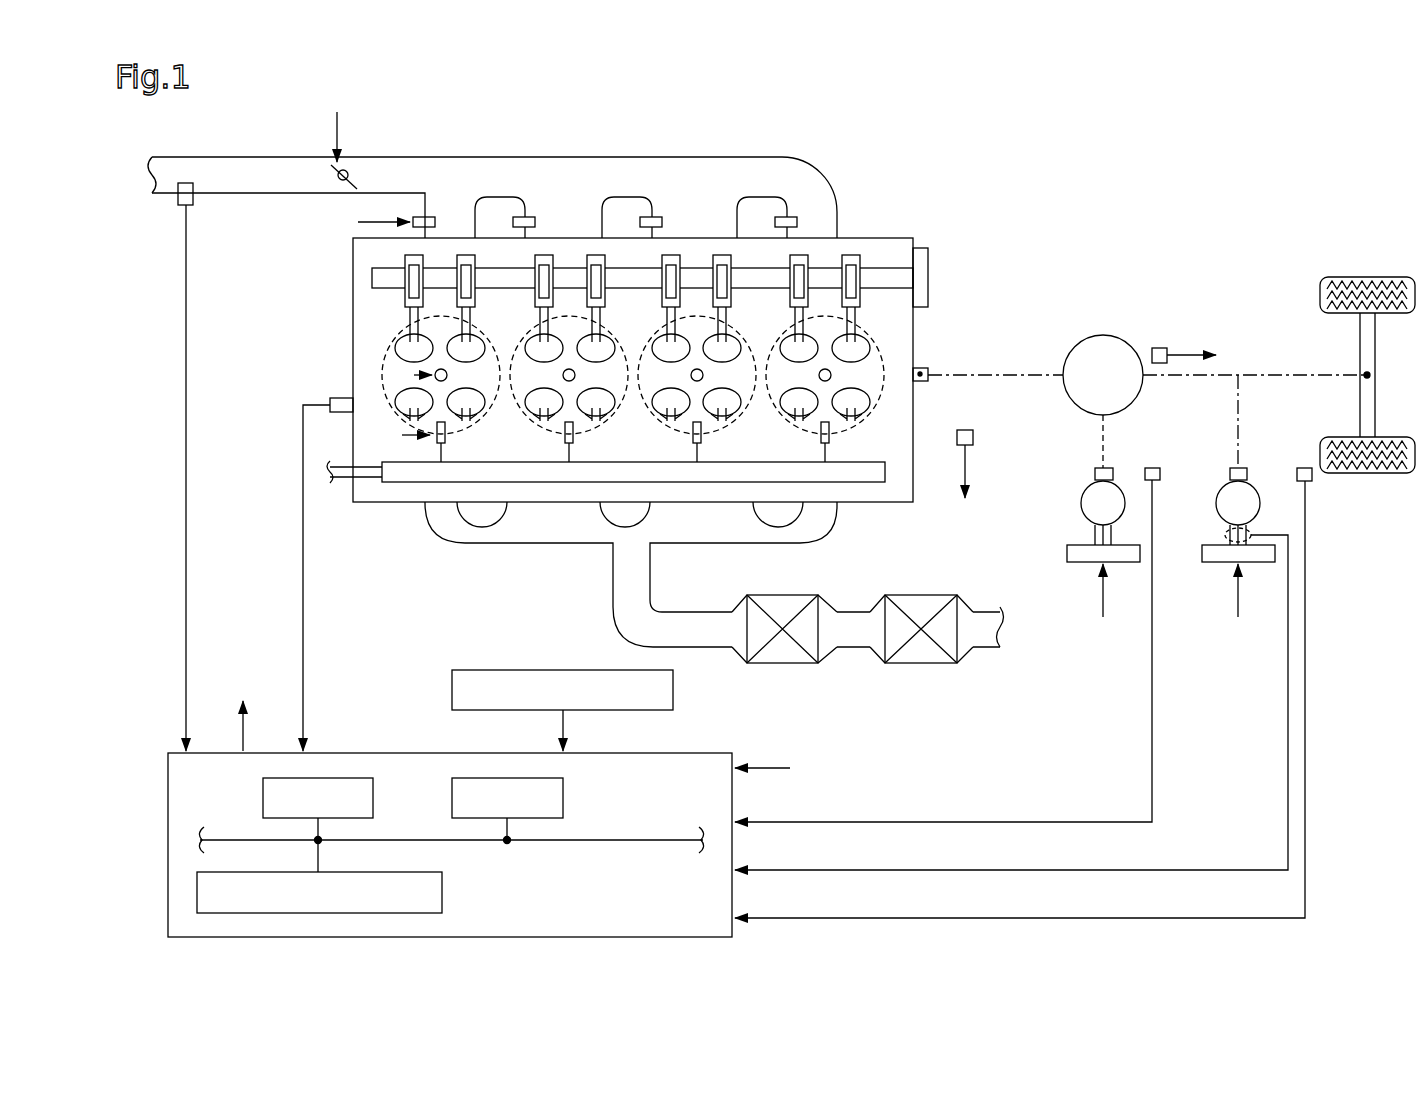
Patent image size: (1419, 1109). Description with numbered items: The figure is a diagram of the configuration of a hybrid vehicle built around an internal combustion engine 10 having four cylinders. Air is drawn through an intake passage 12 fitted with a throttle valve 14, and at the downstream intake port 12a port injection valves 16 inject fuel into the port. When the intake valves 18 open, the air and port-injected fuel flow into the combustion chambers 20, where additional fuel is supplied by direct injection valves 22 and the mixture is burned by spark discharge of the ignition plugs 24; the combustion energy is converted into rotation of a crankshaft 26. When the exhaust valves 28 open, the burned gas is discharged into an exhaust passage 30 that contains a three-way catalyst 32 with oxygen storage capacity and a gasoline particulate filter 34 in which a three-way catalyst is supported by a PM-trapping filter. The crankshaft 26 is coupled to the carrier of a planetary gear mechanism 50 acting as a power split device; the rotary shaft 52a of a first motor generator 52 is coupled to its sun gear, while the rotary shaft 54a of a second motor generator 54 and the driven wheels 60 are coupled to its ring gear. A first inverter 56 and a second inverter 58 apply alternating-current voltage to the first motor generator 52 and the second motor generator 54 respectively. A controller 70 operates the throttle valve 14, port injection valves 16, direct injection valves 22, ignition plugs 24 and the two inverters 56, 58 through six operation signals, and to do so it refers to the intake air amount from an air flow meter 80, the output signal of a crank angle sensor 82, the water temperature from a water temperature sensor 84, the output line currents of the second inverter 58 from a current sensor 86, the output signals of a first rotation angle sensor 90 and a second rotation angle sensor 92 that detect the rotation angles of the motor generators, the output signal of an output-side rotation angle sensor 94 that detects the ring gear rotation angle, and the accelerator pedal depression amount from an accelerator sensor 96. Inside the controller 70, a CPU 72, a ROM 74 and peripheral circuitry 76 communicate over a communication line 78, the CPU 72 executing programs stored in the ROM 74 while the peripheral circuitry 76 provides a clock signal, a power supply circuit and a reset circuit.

The internal combustion engine 10 is at (917, 212).
The intake passage 12 is at (194, 156).
The intake port 12a is at (814, 172).
The throttle valve 14 is at (358, 178).
The port injection valves 16 is at (784, 218).
The intake valves 18 is at (412, 317).
The combustion chambers 20 is at (386, 361).
The direct injection valves 22 is at (446, 437).
The ignition plugs 24 is at (449, 375).
The crankshaft 26 is at (926, 366).
The exhaust valves 28 is at (470, 412).
The exhaust passage 30 is at (704, 543).
The three-way catalyst 32 is at (790, 591).
The gasoline particulate filter 34 is at (930, 591).
The planetary gear mechanism 50 is at (1103, 335).
The first motor generator 52 is at (1081, 504).
The rotary shaft of first motor generator 52a is at (1095, 470).
The second motor generator 54 is at (1216, 504).
The rotary shaft of second motor generator 54a is at (1230, 470).
The first inverter 56 is at (1066, 549).
The second inverter 58 is at (1201, 549).
The driven wheels 60 is at (1370, 477).
The controller 70 is at (418, 753).
The CPU 72 is at (375, 800).
The ROM 74 is at (565, 800).
The peripheral circuitry 76 is at (443, 893).
The communication line 78 is at (661, 839).
The air flow meter 80 is at (182, 206).
The crank angle sensor 82 is at (975, 434).
The water temperature sensor 84 is at (332, 398).
The current sensor 86 is at (1224, 534).
The first rotation angle sensor 90 is at (1152, 468).
The second rotation angle sensor 92 is at (1302, 468).
The output-side rotation angle sensor 94 is at (1161, 347).
The accelerator sensor 96 is at (675, 690).